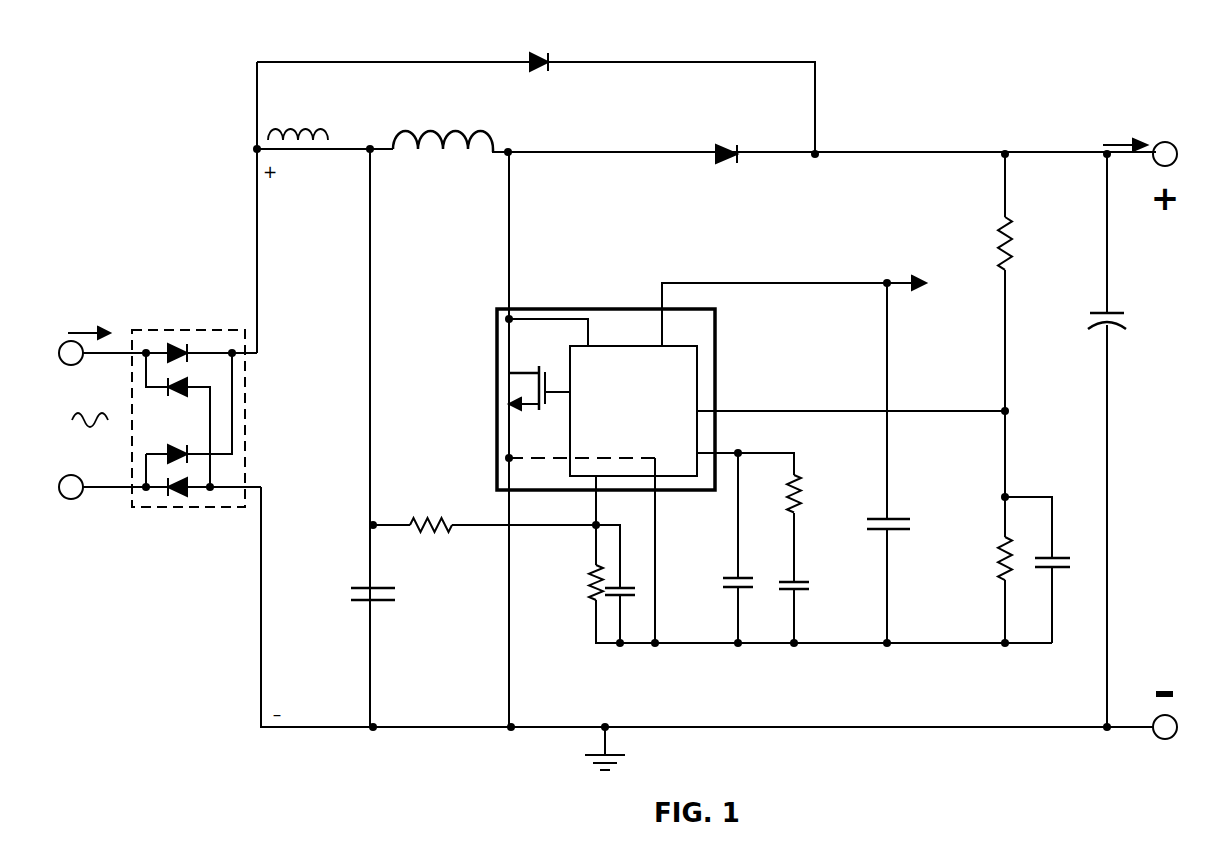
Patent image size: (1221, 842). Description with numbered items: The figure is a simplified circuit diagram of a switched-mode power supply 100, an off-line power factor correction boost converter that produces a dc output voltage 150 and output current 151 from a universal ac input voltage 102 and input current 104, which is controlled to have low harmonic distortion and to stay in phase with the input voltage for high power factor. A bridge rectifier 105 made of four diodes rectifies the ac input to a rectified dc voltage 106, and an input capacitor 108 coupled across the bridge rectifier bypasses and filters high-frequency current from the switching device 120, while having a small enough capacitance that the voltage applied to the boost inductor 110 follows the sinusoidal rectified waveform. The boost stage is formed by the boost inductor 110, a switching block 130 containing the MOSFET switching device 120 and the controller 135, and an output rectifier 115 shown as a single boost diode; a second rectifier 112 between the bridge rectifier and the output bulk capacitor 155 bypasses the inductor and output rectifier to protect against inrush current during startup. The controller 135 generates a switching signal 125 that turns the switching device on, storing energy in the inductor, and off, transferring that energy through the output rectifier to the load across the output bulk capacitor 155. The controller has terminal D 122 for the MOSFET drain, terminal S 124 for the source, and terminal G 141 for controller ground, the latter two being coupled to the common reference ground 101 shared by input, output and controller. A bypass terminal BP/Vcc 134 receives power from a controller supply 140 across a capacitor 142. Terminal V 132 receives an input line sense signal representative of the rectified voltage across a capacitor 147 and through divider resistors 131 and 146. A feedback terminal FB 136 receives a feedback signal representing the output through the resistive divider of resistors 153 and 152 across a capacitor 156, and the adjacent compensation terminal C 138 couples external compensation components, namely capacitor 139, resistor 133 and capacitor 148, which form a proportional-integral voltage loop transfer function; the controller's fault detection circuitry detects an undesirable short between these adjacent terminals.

The switched-mode power supply 100 is at (970, 19).
The reference ground 101 is at (584, 762).
The ac input voltage 102 is at (86, 374).
The input current 104 is at (94, 322).
The bridge rectifier 105 is at (201, 325).
The rectified dc voltage 106 is at (265, 112).
The input capacitor 108 is at (361, 574).
The boost inductor 110 is at (466, 122).
The second rectifier 112 is at (527, 52).
The output rectifier 115 is at (708, 144).
The switching device 120 is at (506, 386).
The terminal D 122 is at (493, 269).
The terminal S 124 is at (483, 496).
The switching signal 125 is at (563, 385).
The switching block 130 is at (598, 308).
The divider resistor 131 is at (432, 514).
The terminal V 132 is at (566, 531).
The resistor 133 is at (805, 501).
The bypass terminal BP/Vcc 134 is at (711, 258).
The controller 135 is at (645, 360).
The feedback terminal FB 136 is at (767, 377).
The compensation terminal C 138 is at (762, 428).
The capacitor 139 is at (731, 590).
The controller supply 140 is at (909, 254).
The terminal G 141 is at (676, 510).
The capacitor 142 is at (900, 538).
The divider resistor 146 is at (584, 596).
The capacitor 147 is at (632, 603).
The capacitor 148 is at (800, 594).
The output voltage 150 is at (1176, 118).
The output current 151 is at (1132, 139).
The resistor 152 is at (996, 554).
The resistor 153 is at (1018, 247).
The output bulk capacitor 155 is at (1122, 320).
The capacitor 156 is at (1065, 552).